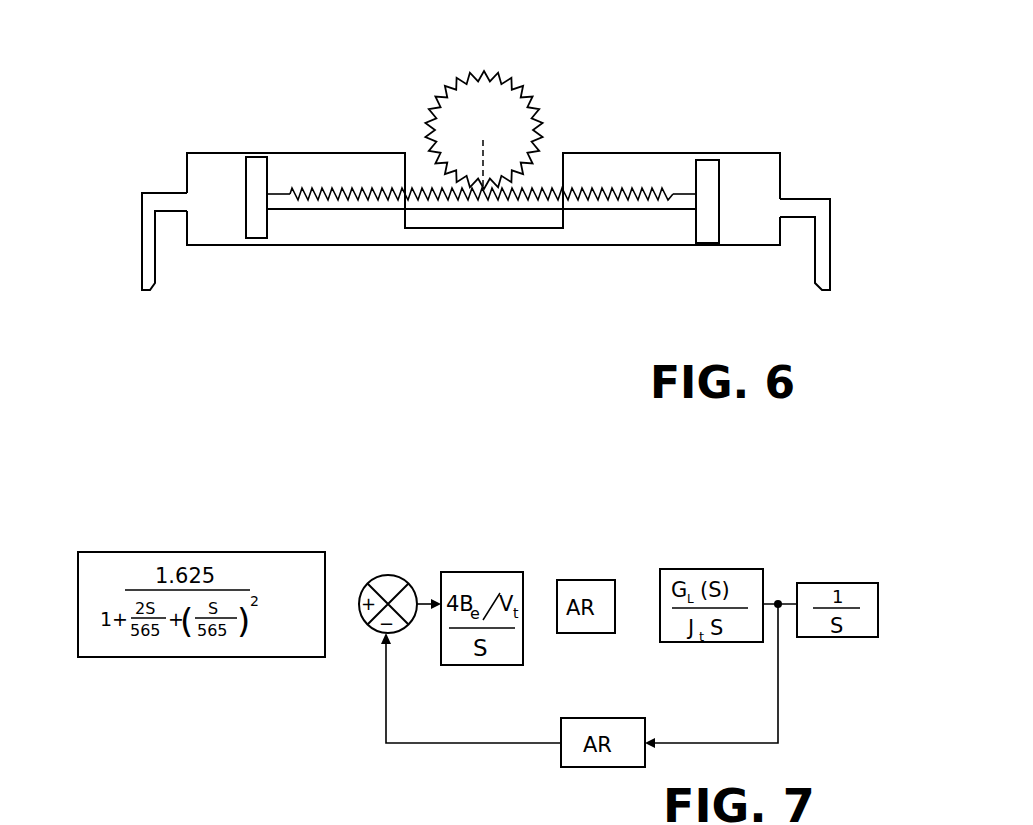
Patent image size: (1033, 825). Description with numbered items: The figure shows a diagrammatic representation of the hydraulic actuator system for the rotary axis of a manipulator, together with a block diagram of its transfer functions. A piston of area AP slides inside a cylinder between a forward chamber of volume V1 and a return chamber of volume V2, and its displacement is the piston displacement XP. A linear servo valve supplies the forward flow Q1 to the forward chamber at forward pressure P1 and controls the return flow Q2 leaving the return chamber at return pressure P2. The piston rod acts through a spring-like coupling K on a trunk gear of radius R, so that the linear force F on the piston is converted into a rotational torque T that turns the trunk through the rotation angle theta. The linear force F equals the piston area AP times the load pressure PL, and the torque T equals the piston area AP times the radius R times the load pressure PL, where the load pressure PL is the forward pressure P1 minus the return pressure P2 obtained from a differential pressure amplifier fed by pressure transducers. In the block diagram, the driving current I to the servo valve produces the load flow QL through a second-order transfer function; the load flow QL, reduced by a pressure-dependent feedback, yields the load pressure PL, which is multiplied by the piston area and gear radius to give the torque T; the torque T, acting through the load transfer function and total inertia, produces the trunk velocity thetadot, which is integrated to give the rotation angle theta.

In FIG. 6, the spring / piston rod K is at (481, 194).
In FIG. 6, the volume of forward chamber V1 is at (232, 197).
In FIG. 6, the volume of return chamber V2 is at (723, 201).
In FIG. 6, the area of piston AP is at (797, 158).
In FIG. 6, the displacement of piston XP is at (282, 127).
In FIG. 6, the radius of the trunk gear R is at (456, 105).
In FIG. 6, the rotation angle of the trunk theta is at (487, 160).
In FIG. 7, the rotation angle of the trunk theta is at (914, 604).
In FIG. 6, the rotational torque T is at (525, 66).
In FIG. 7, the rotational torque T is at (652, 604).
In FIG. 6, the linear force F is at (509, 288).
In FIG. 6, the forward pressure P1 is at (148, 252).
In FIG. 6, the return pressure P2 is at (823, 258).
In FIG. 6, the forward flow Q1 is at (150, 300).
In FIG. 6, the return flow Q2 is at (823, 302).
In FIG. 7, the driving current I is at (70, 604).
In FIG. 7, the load flow QL is at (351, 604).
In FIG. 7, the load pressure PL is at (523, 604).
In FIG. 7, the trunk velocity thetadot is at (777, 582).